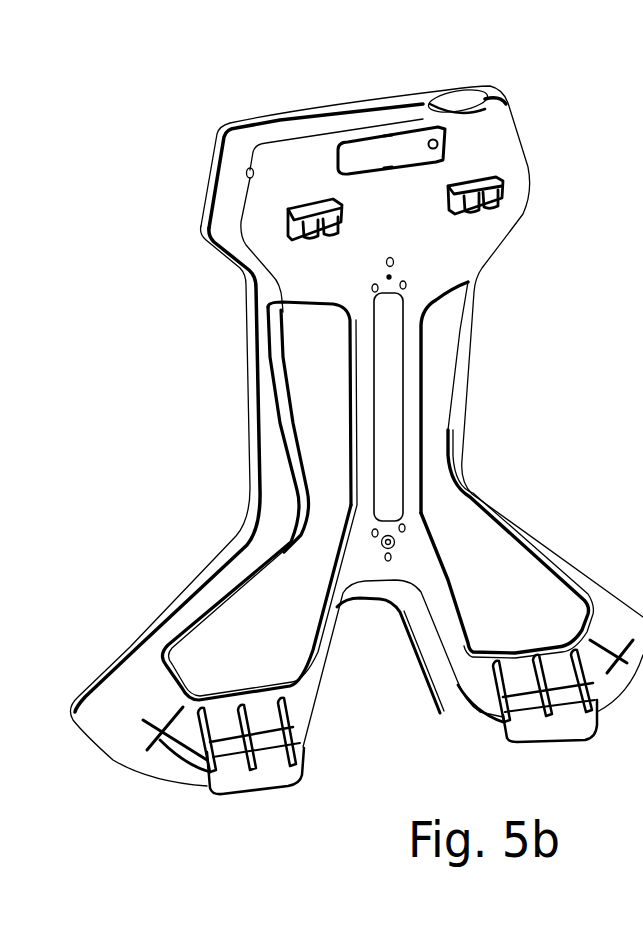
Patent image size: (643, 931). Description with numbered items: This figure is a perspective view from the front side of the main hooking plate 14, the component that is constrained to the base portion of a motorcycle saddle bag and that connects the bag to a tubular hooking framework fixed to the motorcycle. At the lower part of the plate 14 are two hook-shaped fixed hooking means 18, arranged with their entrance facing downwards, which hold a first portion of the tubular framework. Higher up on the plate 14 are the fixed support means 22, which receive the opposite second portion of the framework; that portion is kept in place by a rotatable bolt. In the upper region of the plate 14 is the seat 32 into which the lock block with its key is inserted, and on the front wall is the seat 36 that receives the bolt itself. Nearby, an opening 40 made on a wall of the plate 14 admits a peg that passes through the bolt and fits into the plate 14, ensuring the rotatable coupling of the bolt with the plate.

The main hooking plate 14 is at (482, 413).
The hook-shaped fixed hooking means 18 is at (253, 790).
The fixed support means 22 is at (292, 222).
The seat 32 is at (465, 97).
The seat 36 is at (380, 160).
The opening 40 is at (246, 173).